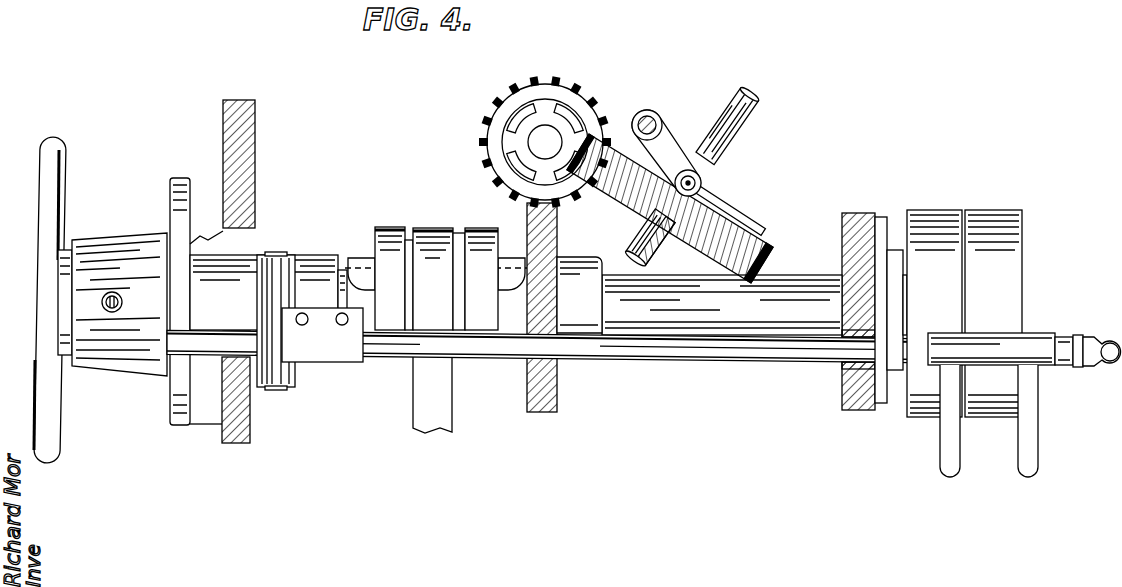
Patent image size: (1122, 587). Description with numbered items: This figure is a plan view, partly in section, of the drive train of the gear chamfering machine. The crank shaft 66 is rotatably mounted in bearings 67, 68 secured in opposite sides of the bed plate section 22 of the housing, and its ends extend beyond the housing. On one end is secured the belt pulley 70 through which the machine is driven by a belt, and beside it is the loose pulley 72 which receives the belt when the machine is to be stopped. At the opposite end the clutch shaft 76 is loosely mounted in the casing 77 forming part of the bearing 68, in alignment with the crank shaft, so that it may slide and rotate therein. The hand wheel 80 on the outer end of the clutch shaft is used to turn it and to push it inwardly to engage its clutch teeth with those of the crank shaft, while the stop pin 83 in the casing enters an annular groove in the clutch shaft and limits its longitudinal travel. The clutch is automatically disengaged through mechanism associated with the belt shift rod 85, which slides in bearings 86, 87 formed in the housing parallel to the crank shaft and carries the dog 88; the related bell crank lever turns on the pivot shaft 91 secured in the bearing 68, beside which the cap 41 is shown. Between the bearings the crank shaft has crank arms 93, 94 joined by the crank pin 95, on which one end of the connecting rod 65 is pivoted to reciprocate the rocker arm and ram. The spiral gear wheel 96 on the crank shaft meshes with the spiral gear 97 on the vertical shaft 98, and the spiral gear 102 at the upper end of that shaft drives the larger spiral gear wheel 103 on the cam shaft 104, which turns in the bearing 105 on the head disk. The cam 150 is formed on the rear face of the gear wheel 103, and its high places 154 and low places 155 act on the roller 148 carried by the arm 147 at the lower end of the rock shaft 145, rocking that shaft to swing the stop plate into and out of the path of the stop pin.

The hand wheel 80 is at (55, 198).
The clutch shaft 76 is at (62, 355).
The casing 77 is at (127, 242).
The stop pin 83 is at (109, 313).
The bearing 68 is at (203, 190).
The bed plate section 22 is at (253, 147).
The bearing cap 41 is at (280, 256).
The crank shaft 66 is at (342, 268).
The bearing 87 is at (243, 368).
The pivot shaft 91 is at (285, 390).
The dog 88 is at (337, 356).
The belt shift rod 85 is at (387, 358).
The crank pin 95 is at (372, 246).
The crank arm 93 is at (387, 227).
The crank arm 94 is at (470, 228).
The spiral gear wheel 96 is at (525, 222).
The connecting rod 65 is at (443, 412).
The spiral gear 97 is at (478, 141).
The vertical shaft 98 is at (545, 140).
The spiral gear 102 is at (574, 142).
The high places 154 is at (613, 140).
The rock shaft 145 is at (652, 117).
The arm 147 is at (690, 150).
The cam shaft 104 is at (750, 120).
The roller 148 is at (703, 185).
The low places 155 is at (703, 207).
The spiral gear wheel 103 is at (630, 197).
The bearing 105 is at (632, 240).
The cam 150 is at (772, 250).
The bearing 67 is at (840, 268).
The bearing 86 is at (840, 367).
The loose pulley 72 is at (918, 420).
The belt pulley 70 is at (988, 420).